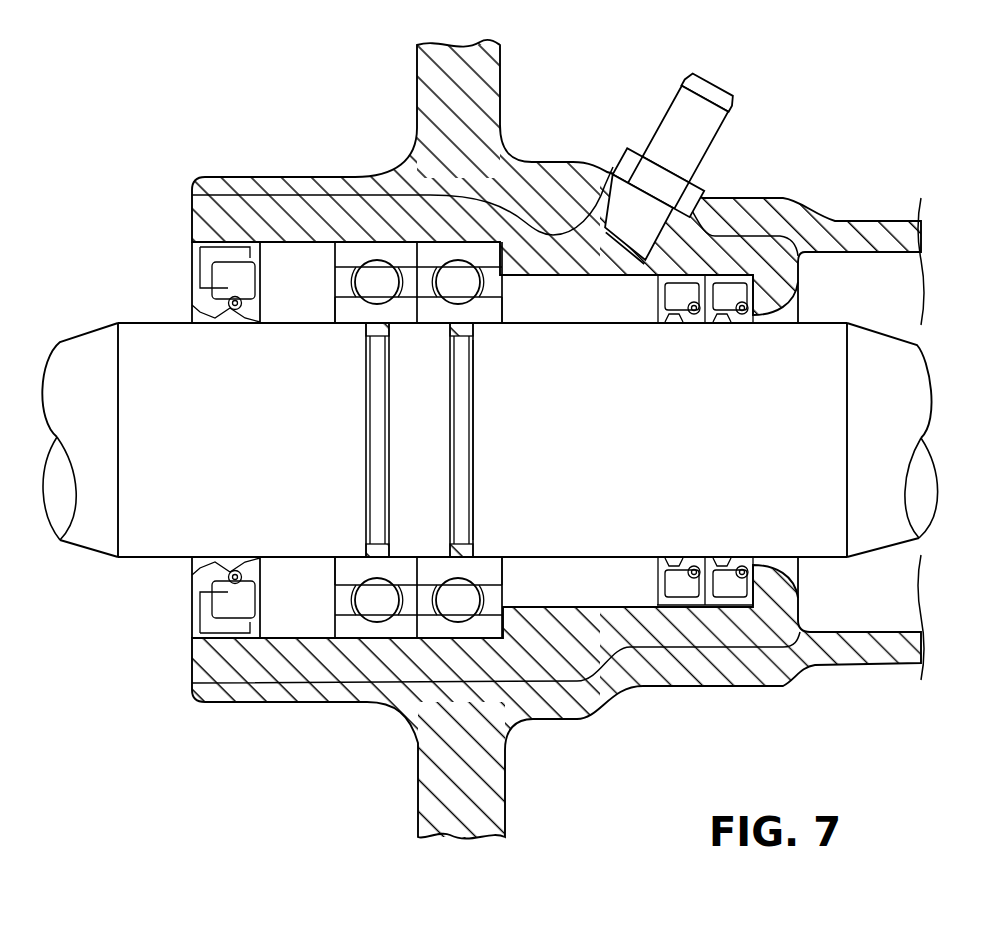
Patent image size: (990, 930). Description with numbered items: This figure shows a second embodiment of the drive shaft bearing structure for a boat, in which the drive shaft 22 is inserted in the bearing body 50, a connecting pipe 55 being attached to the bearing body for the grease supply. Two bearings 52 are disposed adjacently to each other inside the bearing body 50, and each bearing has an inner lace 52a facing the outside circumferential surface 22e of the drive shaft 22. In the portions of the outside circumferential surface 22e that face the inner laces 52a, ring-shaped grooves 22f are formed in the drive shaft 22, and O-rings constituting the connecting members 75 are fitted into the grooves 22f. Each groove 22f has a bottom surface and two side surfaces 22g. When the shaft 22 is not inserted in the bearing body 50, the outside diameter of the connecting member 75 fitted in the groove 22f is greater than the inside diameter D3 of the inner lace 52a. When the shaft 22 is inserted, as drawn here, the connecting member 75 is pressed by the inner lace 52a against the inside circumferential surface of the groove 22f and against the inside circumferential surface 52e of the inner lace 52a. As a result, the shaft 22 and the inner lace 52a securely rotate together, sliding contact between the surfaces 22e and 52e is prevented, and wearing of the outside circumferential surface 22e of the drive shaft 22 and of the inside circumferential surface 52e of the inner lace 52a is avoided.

The bearing body 50 is at (306, 146).
The connecting pipe 55 is at (707, 130).
The drive shaft 22 is at (132, 538).
The outside circumferential surface 22e is at (157, 318).
The ring-shaped groove 22f is at (380, 440).
The side surfaces of the groove 22g is at (476, 439).
The connecting member 75 is at (373, 338).
The inside diameter of the inner lace D3 is at (418, 327).
The bearing 52 is at (437, 647).
The inside circumferential surface of the inner lace 52e is at (353, 557).
The inner lace 52a is at (343, 563).